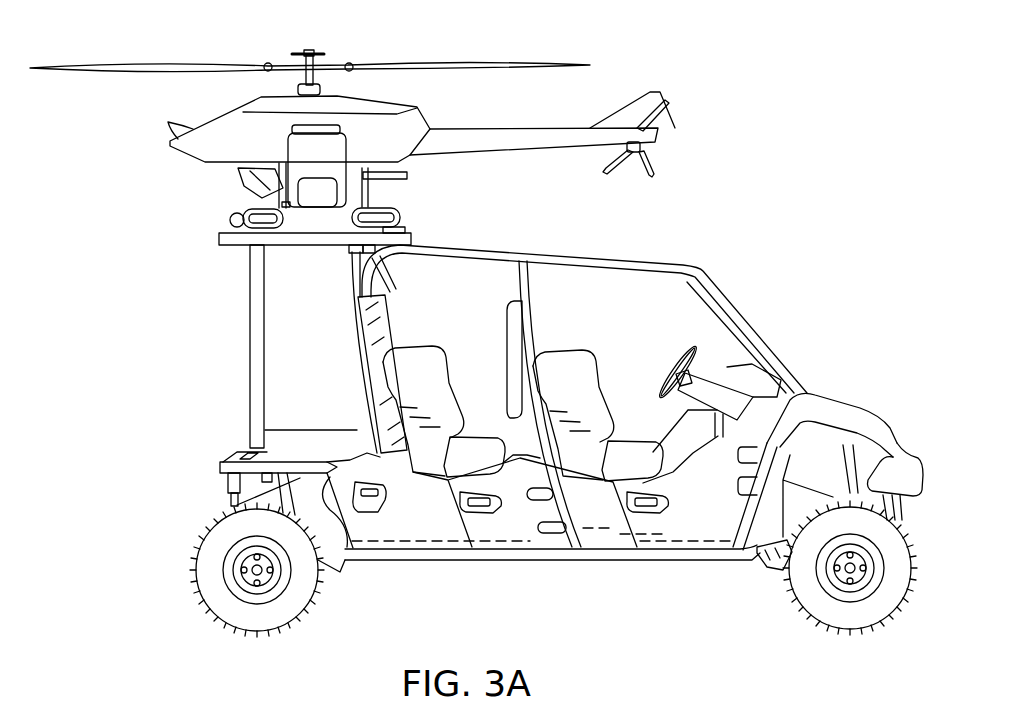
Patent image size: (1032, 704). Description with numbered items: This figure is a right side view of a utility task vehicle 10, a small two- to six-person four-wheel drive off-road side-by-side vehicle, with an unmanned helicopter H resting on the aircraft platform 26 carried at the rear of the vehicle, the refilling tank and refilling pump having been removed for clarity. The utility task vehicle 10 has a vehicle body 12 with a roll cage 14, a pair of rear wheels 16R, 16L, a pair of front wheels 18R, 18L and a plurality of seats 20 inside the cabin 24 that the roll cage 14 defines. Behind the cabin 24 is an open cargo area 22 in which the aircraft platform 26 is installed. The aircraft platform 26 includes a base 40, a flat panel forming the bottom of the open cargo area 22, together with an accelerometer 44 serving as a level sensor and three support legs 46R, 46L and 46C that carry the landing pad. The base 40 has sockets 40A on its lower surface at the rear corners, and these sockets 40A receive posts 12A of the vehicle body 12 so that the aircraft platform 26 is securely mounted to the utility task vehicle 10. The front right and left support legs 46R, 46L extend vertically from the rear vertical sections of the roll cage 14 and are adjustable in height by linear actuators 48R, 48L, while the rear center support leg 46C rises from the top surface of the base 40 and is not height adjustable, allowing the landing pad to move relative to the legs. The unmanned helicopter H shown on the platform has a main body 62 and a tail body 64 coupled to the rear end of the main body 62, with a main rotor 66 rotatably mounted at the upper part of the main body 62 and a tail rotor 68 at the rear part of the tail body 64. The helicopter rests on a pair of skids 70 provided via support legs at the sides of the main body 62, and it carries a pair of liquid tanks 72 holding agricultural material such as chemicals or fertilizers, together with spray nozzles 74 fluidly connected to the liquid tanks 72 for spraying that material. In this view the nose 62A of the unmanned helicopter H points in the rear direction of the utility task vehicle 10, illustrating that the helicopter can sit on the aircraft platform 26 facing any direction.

The unmanned helicopter H is at (642, 39).
The utility task vehicle 10 is at (822, 246).
The vehicle body 12 is at (888, 412).
The posts 12A is at (230, 506).
The roll cage 14 is at (652, 263).
The rear wheel 16L is at (341, 571).
The rear wheel 16R is at (273, 610).
The front wheel 18L is at (768, 568).
The front wheel 18R is at (864, 610).
The seats 20 is at (446, 348).
The open cargo area 22 is at (178, 293).
The cabin 24 is at (560, 305).
The aircraft platform 26 is at (190, 220).
The base 40 is at (302, 447).
The sockets 40A is at (229, 477).
The accelerometer 44 is at (245, 449).
The center support leg 46C is at (248, 334).
The left support leg 46L is at (392, 275).
The right support leg 46R is at (351, 272).
The linear actuator 48L is at (366, 246).
The linear actuator 48R is at (341, 257).
The main body 62 is at (190, 163).
The nose 62A is at (176, 140).
The tail body 64 is at (509, 143).
The main rotor 66 is at (101, 62).
The tail rotor 68 is at (626, 175).
The skids 70 is at (400, 217).
The liquid tanks 72 is at (322, 148).
The spray nozzles 74 is at (282, 190).